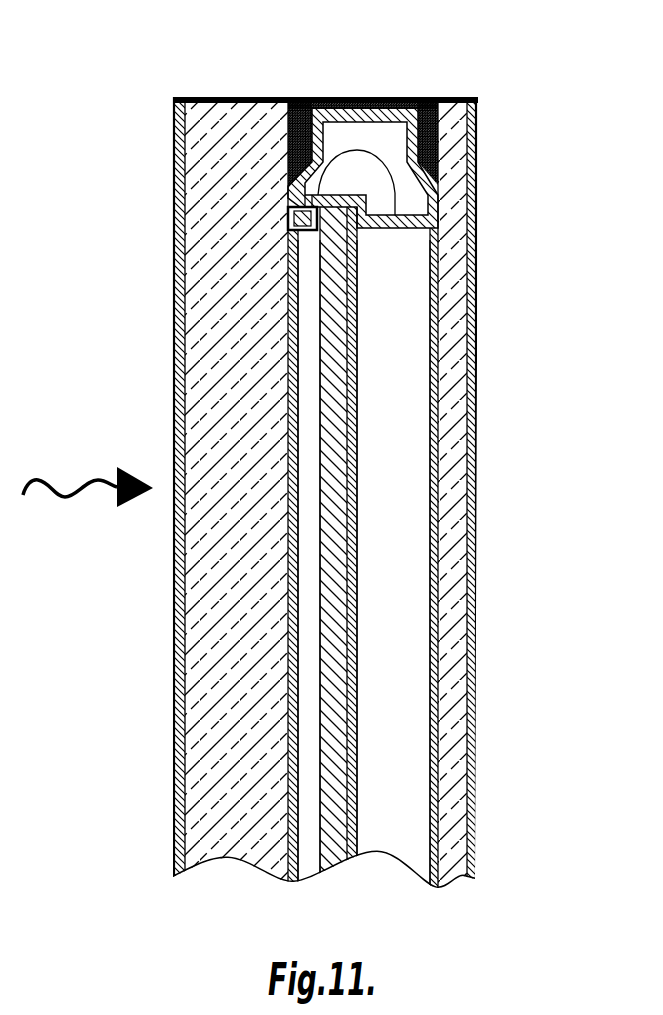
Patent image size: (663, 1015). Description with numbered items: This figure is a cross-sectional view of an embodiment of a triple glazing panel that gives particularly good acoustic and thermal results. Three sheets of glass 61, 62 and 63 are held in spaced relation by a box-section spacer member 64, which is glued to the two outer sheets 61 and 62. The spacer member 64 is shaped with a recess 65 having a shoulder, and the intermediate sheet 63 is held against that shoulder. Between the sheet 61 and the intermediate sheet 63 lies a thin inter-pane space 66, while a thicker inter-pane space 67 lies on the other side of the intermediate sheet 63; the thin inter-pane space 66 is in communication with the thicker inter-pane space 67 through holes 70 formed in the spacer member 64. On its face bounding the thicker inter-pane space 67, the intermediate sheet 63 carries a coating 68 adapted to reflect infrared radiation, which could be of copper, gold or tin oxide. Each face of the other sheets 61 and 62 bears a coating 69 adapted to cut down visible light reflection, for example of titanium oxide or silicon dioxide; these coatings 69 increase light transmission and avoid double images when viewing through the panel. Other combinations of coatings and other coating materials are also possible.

The sheet of glass 61 is at (228, 790).
The sheet of glass 62 is at (455, 548).
The intermediate sheet 63 is at (330, 762).
The box-section spacer member 64 is at (422, 100).
The recess 65 is at (300, 172).
The thin inter-pane space 66 is at (307, 597).
The thicker inter-pane space 67 is at (409, 603).
The coating 68 is at (357, 413).
The coating 69 is at (476, 302).
The holes 70 is at (393, 277).